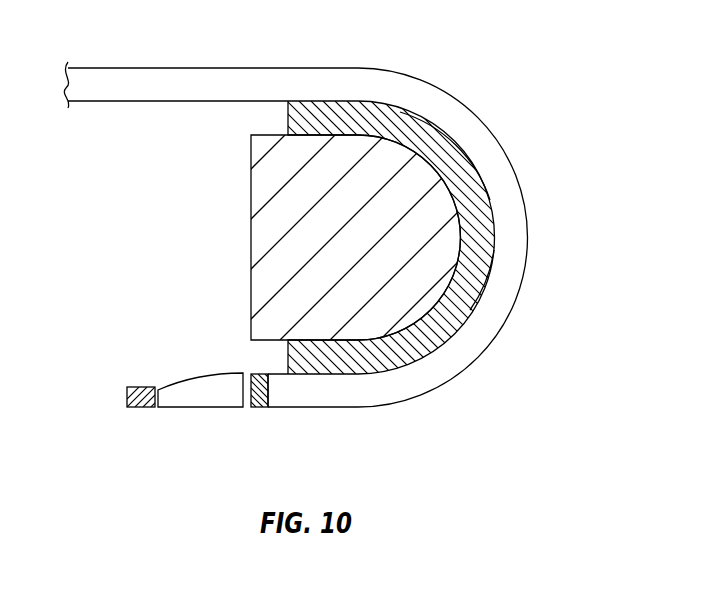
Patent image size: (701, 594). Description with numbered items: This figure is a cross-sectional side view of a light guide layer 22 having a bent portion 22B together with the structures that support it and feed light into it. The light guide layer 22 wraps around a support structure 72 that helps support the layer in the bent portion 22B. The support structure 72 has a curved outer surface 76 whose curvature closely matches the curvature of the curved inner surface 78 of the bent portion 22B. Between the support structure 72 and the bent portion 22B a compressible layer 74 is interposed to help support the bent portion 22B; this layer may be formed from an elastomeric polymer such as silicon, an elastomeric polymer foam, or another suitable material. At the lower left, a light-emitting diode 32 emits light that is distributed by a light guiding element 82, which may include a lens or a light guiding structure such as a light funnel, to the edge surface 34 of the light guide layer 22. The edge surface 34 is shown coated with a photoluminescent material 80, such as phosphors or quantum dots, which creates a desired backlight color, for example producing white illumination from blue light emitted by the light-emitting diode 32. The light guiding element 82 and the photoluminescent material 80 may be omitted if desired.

The light guide layer 22 is at (108, 80).
The bent portion 22B is at (517, 240).
The light-emitting diode 32 is at (143, 398).
The edge surface 34 is at (269, 388).
The support structure 72 is at (413, 178).
The compressible layer 74 is at (477, 205).
The curved outer surface 76 is at (408, 118).
The curved inner surface 78 is at (482, 268).
The photoluminescent material 80 is at (258, 398).
The light guiding element 82 is at (198, 388).